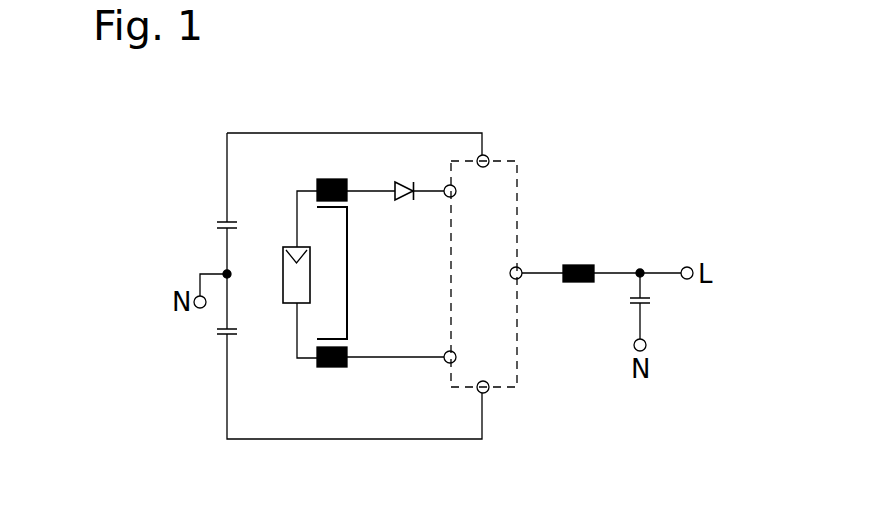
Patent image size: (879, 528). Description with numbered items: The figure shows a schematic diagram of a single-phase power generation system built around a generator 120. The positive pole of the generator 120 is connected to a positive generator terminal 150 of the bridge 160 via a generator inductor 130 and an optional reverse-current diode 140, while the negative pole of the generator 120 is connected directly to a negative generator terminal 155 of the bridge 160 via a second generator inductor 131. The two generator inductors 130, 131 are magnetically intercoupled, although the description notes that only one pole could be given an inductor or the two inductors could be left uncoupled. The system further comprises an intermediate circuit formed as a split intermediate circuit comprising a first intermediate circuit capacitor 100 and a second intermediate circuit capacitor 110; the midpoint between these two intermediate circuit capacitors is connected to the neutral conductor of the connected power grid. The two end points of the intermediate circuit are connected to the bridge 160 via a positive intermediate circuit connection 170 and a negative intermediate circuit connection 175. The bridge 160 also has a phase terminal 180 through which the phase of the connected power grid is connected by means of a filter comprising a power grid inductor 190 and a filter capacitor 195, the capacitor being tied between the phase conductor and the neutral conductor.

The first intermediate circuit capacitor 100 is at (220, 220).
The second intermediate circuit capacitor 110 is at (220, 336).
The generator 120 is at (287, 305).
The generator inductor 130 is at (332, 182).
The second generator inductor 131 is at (328, 368).
The reverse-current diode 140 is at (407, 182).
The positive generator terminal 150 is at (445, 200).
The negative generator terminal 155 is at (445, 352).
The bridge 160 is at (517, 193).
The positive intermediate circuit connection 170 is at (487, 155).
The negative intermediate circuit connection 175 is at (488, 392).
The phase terminal 180 is at (520, 279).
The power grid inductor 190 is at (578, 265).
The filter capacitor 195 is at (647, 304).